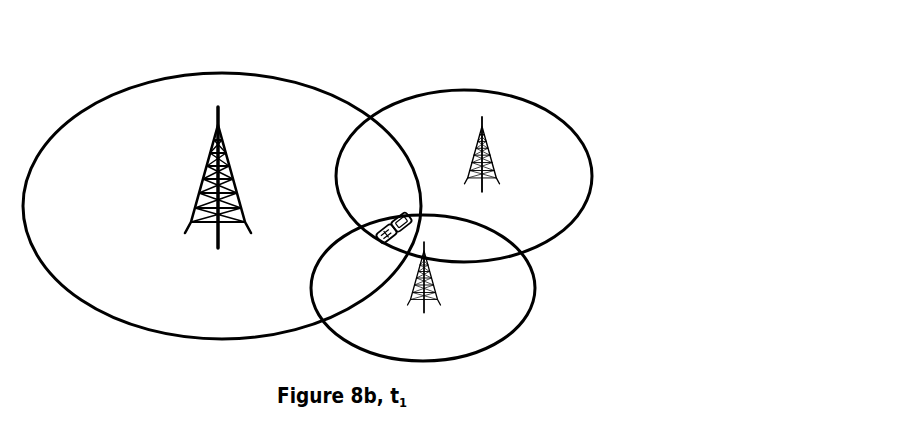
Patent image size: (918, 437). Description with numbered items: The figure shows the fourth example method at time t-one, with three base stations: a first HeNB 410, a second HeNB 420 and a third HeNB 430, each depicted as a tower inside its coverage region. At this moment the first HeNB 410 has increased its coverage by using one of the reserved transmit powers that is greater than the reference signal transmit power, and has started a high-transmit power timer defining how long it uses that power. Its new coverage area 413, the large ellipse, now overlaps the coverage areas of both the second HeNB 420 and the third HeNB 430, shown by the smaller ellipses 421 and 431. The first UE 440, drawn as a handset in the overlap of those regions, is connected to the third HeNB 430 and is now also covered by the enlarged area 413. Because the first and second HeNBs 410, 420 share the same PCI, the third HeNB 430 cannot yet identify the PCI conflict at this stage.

The first HeNB 410 is at (216, 132).
The new coverage area 413 is at (287, 78).
The second HeNB 420 is at (488, 145).
The coverage area of second base station 421 is at (590, 157).
The third HeNB 430 is at (440, 292).
The coverage area of third base station 431 is at (530, 315).
The first UE 440 is at (383, 246).